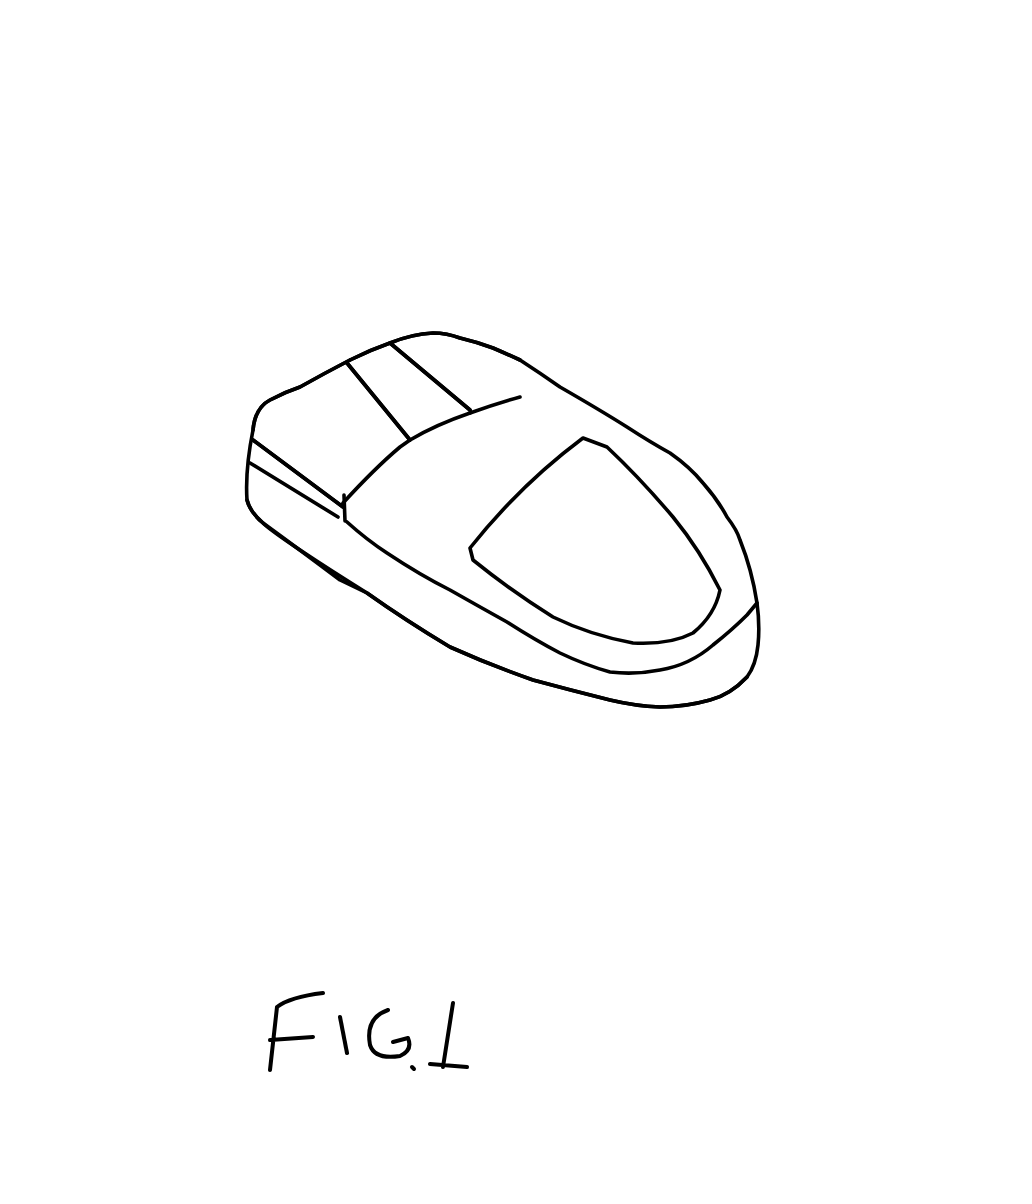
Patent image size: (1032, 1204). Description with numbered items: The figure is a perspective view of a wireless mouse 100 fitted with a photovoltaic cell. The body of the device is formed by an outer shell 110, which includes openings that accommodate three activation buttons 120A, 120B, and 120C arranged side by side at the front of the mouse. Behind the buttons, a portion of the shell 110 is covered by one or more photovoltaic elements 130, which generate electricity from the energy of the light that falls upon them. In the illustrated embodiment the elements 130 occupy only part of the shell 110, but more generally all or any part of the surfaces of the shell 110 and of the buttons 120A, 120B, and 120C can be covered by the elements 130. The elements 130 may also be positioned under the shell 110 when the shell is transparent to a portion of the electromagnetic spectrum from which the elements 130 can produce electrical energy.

The wireless mouse 100 is at (418, 162).
The outer shell 110 is at (406, 610).
The activation button 120A is at (281, 424).
The activation button 120B is at (358, 389).
The activation button 120C is at (504, 380).
The photovoltaic element 130 is at (661, 545).